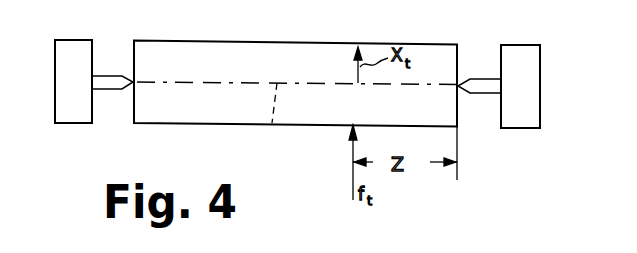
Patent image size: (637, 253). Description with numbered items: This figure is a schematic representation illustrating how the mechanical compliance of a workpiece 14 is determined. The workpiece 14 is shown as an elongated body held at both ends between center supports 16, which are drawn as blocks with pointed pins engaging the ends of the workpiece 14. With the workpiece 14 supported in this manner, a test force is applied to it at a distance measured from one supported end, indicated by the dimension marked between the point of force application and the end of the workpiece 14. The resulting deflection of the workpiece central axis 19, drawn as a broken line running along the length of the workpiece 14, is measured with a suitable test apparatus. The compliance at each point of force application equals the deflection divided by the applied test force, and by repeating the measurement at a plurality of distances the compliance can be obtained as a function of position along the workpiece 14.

The workpiece 14 is at (268, 52).
The center supports 16 is at (66, 101).
The workpiece central axis 19 is at (272, 134).